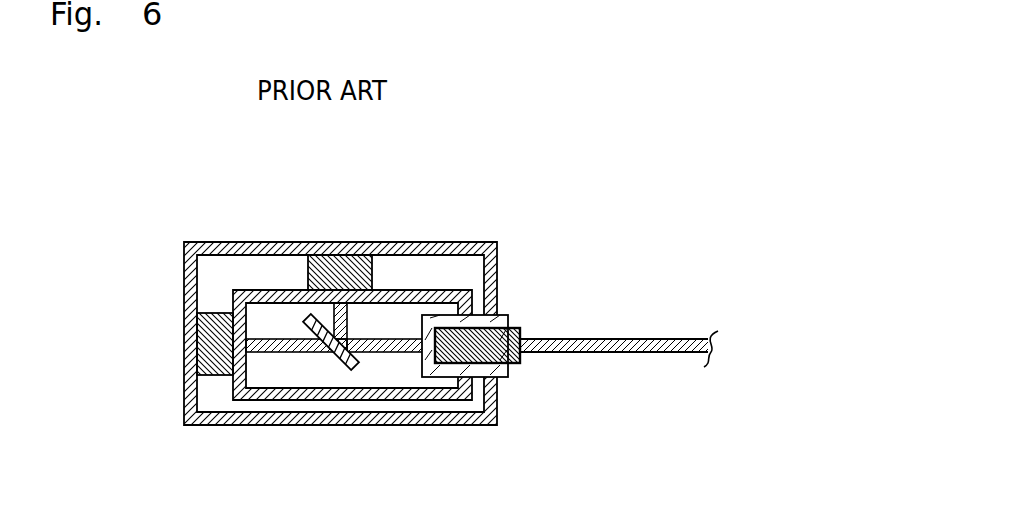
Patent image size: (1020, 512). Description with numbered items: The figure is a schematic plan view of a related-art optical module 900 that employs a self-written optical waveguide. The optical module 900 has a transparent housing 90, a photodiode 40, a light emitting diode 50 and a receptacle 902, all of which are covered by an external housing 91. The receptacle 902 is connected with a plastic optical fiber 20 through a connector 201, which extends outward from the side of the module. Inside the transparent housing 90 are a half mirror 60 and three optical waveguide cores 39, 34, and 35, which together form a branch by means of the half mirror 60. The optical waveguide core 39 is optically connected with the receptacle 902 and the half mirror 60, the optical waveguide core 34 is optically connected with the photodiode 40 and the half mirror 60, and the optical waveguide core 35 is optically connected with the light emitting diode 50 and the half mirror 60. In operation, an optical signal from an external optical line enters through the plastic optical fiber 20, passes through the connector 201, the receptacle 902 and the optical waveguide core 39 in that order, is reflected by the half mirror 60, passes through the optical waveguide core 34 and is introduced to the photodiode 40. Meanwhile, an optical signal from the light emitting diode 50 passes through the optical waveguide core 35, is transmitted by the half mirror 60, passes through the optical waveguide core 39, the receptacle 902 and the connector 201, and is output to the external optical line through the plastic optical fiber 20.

The optical module 900 is at (633, 220).
The external housing 91 is at (188, 257).
The photodiode (PD) 40 is at (342, 270).
The light emitting diode (LED) 50 is at (210, 355).
The transparent housing 90 is at (308, 395).
The optical waveguide core 35 is at (282, 350).
The optical waveguide core 39 is at (385, 347).
The optical waveguide core 34 is at (347, 313).
The half mirror 60 is at (342, 362).
The receptacle 902 is at (505, 318).
The connector 201 is at (493, 343).
The plastic optical fiber (POF) 20 is at (645, 350).